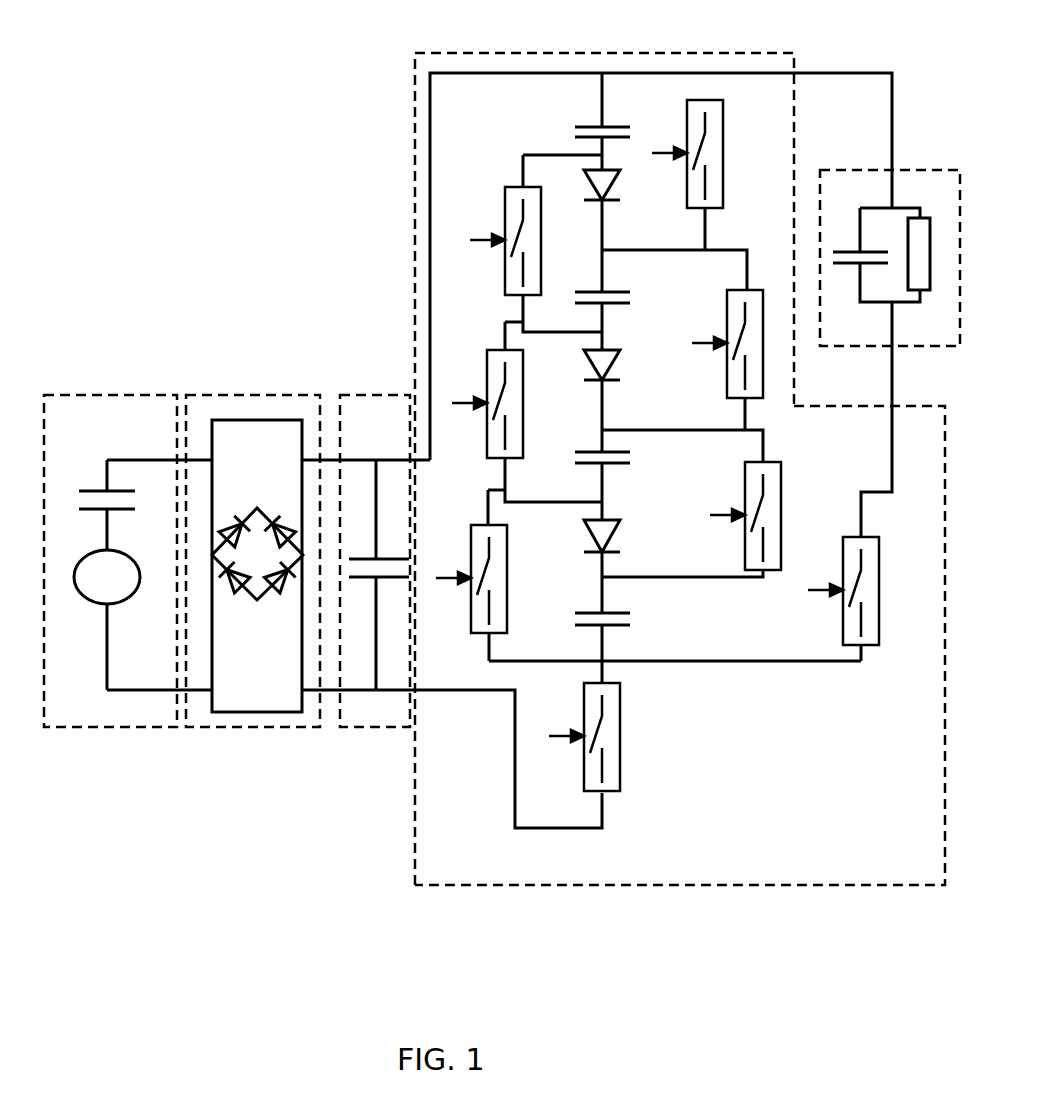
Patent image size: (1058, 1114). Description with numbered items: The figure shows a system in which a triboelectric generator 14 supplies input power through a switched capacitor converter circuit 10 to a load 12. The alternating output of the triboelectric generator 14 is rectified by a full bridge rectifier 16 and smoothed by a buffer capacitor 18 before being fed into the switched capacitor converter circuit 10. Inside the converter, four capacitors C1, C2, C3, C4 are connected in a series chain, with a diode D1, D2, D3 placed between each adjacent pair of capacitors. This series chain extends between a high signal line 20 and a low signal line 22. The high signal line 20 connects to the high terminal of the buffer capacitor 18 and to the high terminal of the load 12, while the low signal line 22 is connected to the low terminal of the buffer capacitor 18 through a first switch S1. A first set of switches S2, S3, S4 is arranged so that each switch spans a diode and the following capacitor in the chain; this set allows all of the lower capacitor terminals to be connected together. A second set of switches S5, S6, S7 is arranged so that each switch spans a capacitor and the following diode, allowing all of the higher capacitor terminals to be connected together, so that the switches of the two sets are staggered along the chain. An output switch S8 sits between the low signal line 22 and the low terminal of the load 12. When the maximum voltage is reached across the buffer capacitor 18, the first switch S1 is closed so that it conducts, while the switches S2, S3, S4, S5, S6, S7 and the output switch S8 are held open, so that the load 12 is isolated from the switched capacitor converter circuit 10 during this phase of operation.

The switched capacitor converter circuit 10 is at (626, 886).
The load 12 is at (915, 170).
The triboelectric generator 14 is at (107, 393).
The full bridge rectifier 16 is at (248, 393).
The buffer capacitor 18 is at (366, 393).
The high signal line 20 is at (585, 72).
The low signal line 22 is at (726, 663).
The capacitor C1 is at (595, 110).
The capacitor C2 is at (595, 278).
The capacitor C3 is at (595, 443).
The capacitor C4 is at (595, 608).
The diode D1 is at (590, 184).
The diode D2 is at (591, 369).
The diode D3 is at (591, 528).
The first switch S1 is at (584, 737).
The switch of first set S2 is at (505, 241).
The switch of first set S3 is at (487, 404).
The switch of first set S4 is at (471, 579).
The switch of second set S5 is at (687, 154).
The switch of second set S6 is at (727, 344).
The switch of second set S7 is at (744, 516).
The output switch S8 is at (843, 591).